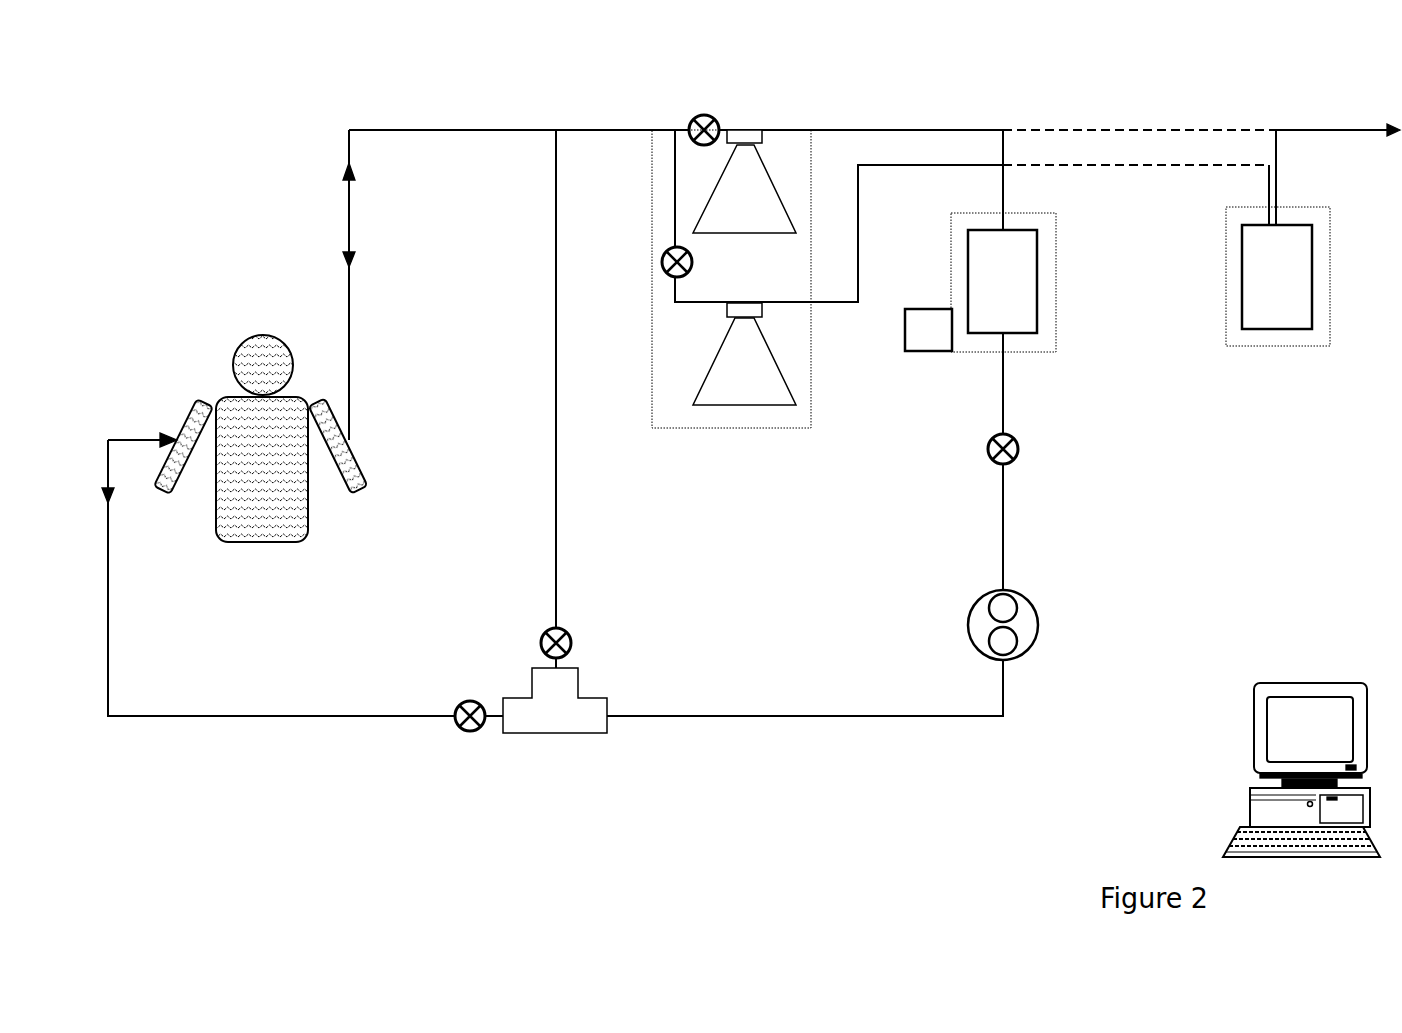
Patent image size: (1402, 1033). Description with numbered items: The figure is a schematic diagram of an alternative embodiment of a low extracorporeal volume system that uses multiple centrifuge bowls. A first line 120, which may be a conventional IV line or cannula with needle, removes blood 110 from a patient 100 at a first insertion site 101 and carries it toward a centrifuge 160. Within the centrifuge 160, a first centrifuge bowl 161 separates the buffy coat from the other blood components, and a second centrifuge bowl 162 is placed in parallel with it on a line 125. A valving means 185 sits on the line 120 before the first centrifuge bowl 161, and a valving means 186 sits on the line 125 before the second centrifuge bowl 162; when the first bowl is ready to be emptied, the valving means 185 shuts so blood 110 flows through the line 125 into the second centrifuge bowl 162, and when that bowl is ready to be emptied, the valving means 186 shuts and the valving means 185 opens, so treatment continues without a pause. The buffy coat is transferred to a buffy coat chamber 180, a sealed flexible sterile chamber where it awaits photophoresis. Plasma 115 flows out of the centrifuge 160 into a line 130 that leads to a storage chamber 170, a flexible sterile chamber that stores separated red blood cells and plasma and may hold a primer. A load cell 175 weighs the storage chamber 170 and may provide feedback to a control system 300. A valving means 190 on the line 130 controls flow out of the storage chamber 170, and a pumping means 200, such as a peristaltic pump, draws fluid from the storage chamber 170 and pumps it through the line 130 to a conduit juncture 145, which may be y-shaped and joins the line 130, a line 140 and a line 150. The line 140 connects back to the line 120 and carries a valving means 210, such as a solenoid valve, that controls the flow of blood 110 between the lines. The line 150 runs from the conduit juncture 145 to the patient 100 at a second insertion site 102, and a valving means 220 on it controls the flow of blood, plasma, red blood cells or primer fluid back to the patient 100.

The patient 100 is at (240, 346).
The first insertion site 101 is at (350, 438).
The second insertion site 102 is at (172, 437).
The blood 110 is at (350, 392).
The plasma 115 is at (788, 128).
The first line 120 is at (350, 347).
The line 125 is at (785, 302).
The line 130 is at (1003, 567).
The line 140 is at (558, 542).
The conduit juncture 145 is at (567, 732).
The line 150 is at (108, 657).
The centrifuge 160 is at (652, 413).
The centrifuge bowl 161 is at (762, 165).
The second centrifuge bowl 162 is at (748, 407).
The storage chamber 170 is at (1033, 280).
The load cell 175 is at (933, 348).
The buffy coat chamber 180 is at (1312, 250).
The valving means 185 is at (683, 118).
The valving means 186 is at (658, 263).
The valving means 190 is at (1022, 450).
The pumping means 200 is at (1038, 638).
The valving means 210 is at (573, 642).
The valving means 220 is at (462, 698).
The control system 300 is at (1253, 730).